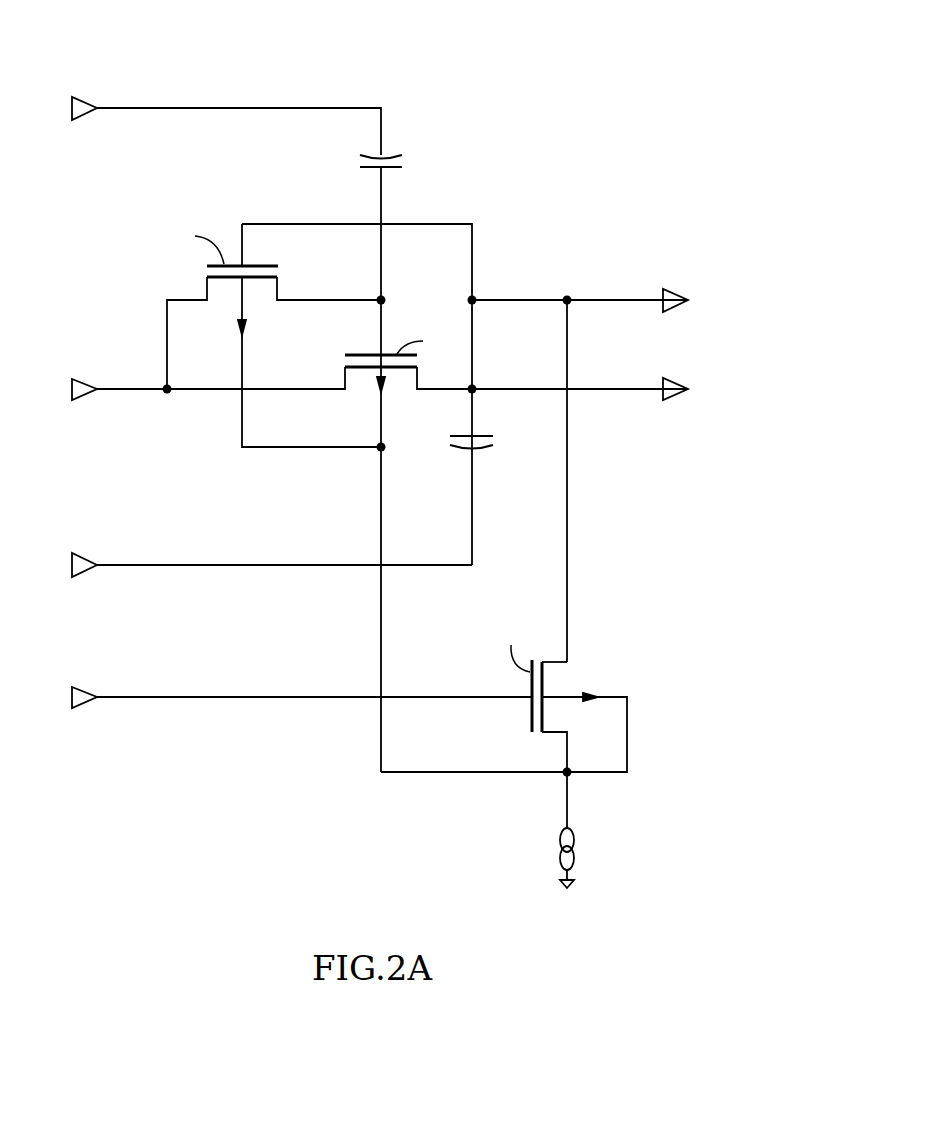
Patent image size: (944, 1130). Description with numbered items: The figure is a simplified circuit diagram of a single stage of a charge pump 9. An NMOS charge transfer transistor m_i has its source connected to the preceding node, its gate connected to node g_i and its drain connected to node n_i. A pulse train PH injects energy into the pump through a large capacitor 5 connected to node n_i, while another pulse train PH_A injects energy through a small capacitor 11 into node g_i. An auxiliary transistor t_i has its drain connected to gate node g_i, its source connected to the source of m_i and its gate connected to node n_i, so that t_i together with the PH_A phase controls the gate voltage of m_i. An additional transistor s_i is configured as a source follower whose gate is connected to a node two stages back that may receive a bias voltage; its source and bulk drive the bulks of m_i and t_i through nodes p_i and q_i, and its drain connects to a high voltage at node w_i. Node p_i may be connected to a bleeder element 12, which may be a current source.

The charge pump 9 is at (535, 93).
The small capacitor 11 is at (362, 160).
The large capacitor 5 is at (483, 451).
The bleeder element 12 is at (573, 861).